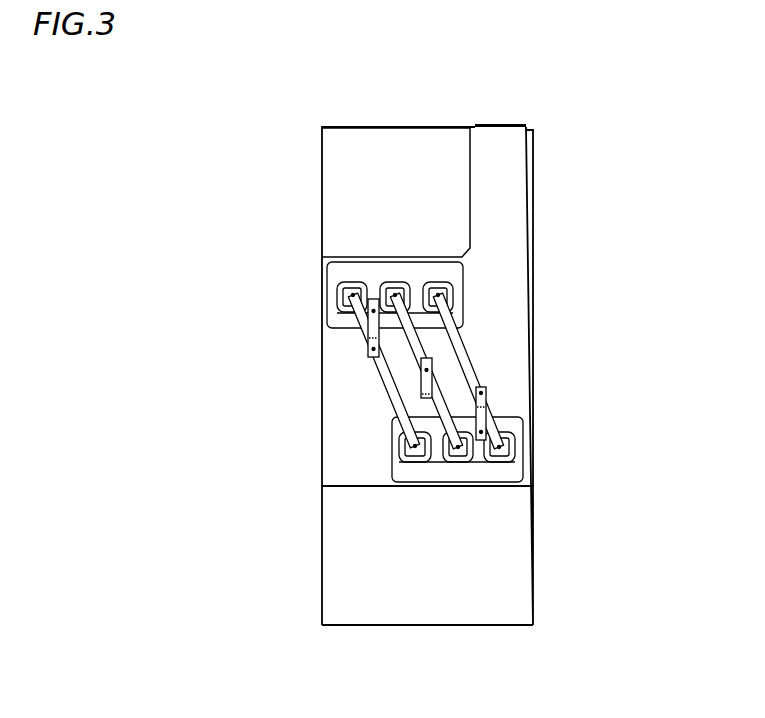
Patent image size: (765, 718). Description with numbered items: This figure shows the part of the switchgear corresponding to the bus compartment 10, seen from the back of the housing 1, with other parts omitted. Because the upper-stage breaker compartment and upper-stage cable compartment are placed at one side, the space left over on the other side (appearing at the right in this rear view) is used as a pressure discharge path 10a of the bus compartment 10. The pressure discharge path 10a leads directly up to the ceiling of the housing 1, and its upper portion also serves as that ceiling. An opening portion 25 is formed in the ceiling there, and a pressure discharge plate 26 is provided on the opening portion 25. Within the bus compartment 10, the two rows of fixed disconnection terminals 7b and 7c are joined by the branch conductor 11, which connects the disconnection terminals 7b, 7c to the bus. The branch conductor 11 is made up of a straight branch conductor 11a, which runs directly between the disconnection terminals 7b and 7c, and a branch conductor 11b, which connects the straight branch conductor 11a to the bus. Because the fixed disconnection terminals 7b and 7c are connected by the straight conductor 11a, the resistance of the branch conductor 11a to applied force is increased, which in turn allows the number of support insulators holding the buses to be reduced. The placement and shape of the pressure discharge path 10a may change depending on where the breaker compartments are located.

The housing 1 is at (322, 168).
The bus compartment 10 is at (341, 378).
The pressure discharge path 10a is at (512, 243).
The opening portion 25 is at (503, 132).
The pressure discharge plate 26 is at (507, 127).
The disconnection terminal 7b is at (347, 298).
The disconnection terminal 7c is at (406, 446).
The branch conductor 11 is at (525, 371).
The straight branch conductor 11a is at (468, 353).
The branch conductor 11b is at (488, 397).